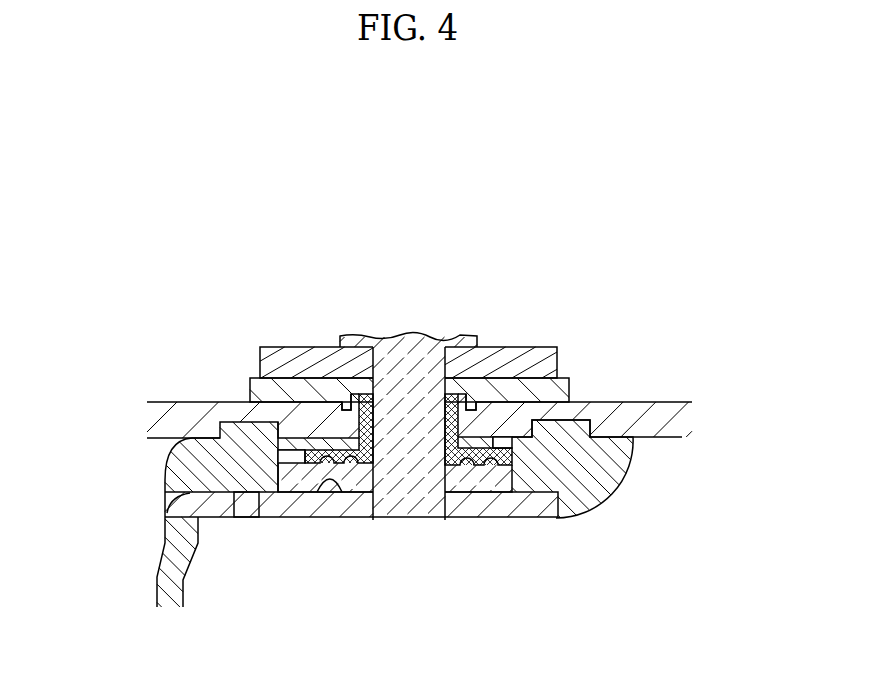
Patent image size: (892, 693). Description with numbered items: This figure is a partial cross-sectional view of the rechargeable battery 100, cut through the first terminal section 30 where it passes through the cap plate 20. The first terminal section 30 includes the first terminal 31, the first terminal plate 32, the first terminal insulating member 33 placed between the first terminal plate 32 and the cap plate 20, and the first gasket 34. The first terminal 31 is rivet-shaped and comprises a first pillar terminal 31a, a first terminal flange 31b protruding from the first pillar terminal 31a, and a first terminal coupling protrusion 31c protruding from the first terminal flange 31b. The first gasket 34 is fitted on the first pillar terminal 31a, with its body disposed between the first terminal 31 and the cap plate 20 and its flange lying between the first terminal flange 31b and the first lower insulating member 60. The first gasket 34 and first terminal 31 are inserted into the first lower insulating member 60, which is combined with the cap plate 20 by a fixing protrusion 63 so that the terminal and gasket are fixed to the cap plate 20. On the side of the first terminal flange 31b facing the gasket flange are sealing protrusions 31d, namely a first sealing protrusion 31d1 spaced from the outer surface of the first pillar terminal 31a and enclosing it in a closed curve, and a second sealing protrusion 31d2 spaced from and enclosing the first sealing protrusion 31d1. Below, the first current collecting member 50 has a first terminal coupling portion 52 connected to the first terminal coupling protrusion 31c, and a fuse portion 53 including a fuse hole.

The rechargeable battery 100 is at (421, 189).
The cap plate 20 is at (665, 400).
The first terminal section 30 is at (506, 417).
The first terminal 31 is at (506, 417).
The first pillar terminal 31a is at (403, 408).
The first terminal flange 31b is at (490, 478).
The first terminal coupling protrusion 31c is at (427, 508).
The sealing protrusions 31d is at (371, 341).
The first sealing protrusion 31d1 is at (356, 452).
The second sealing protrusion 31d2 is at (330, 453).
The first terminal plate 32 is at (532, 358).
The first terminal insulating member 33 is at (567, 378).
The first gasket 34 is at (455, 420).
The first current collecting member 50 is at (157, 577).
The first terminal coupling portion 52 is at (361, 564).
The fuse portion 53 is at (247, 508).
The first lower insulating member 60 is at (603, 507).
The fixing protrusion 63 is at (317, 492).